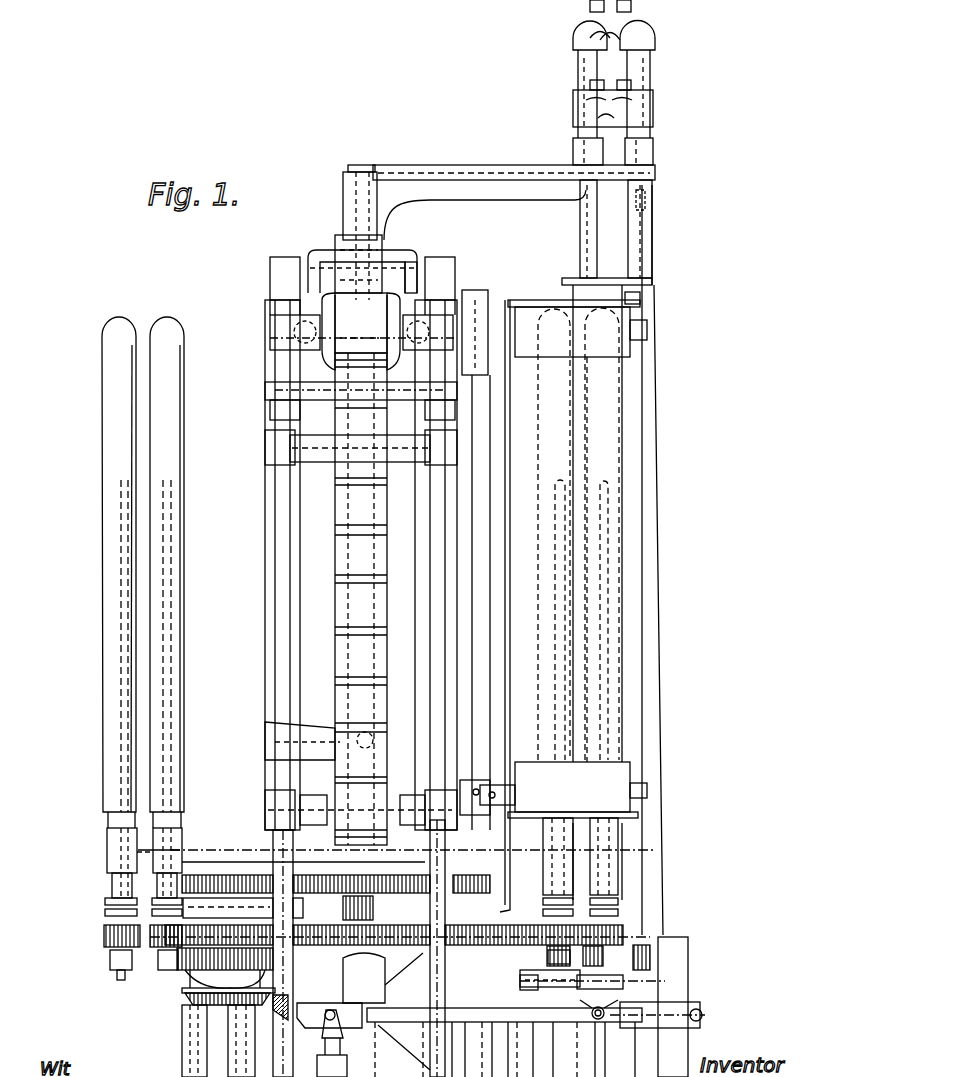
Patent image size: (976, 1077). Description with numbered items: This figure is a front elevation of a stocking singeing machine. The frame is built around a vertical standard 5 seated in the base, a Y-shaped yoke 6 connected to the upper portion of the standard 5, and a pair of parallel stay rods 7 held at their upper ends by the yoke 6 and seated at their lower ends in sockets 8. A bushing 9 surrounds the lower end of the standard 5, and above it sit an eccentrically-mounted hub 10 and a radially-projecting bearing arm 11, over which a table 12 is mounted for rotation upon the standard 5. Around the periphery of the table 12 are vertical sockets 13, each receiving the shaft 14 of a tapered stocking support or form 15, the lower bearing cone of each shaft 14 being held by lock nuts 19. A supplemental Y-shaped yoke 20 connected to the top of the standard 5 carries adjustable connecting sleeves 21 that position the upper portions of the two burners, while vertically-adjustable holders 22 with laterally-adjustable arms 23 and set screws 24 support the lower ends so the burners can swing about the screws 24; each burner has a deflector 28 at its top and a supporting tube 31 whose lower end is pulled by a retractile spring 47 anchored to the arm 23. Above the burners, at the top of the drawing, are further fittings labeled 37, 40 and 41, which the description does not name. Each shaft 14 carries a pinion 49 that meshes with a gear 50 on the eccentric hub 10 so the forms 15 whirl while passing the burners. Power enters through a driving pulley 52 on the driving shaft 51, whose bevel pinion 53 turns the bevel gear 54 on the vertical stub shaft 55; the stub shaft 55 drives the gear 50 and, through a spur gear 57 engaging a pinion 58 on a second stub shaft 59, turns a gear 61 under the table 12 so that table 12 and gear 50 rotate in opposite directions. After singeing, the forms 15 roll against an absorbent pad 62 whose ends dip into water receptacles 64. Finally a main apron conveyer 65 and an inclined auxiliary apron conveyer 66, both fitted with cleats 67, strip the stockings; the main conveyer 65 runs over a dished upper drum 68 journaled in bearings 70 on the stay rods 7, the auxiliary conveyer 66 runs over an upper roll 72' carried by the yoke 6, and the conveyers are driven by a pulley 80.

The standard 5 is at (367, 165).
The Y-shaped yoke 6 is at (418, 260).
The stay rods 7 is at (265, 582).
The sockets 8 is at (305, 1035).
The bushing 9 is at (392, 985).
The eccentrically-mounted hub 10 is at (400, 924).
The bearing arm 11 is at (202, 878).
The table 12 is at (248, 852).
The sockets 13 is at (107, 862).
The shaft 14 is at (122, 975).
The stocking support or form 15 is at (102, 602).
The lock nuts 19 is at (105, 912).
The supplemental Y-shaped yoke 20 is at (468, 166).
The connecting sleeves 21 is at (573, 150).
The holders 22 is at (560, 990).
The arms 23 is at (520, 976).
The set screws 24 is at (594, 1022).
The deflector 28 is at (572, 278).
The supporting tube 31 is at (642, 237).
The pipes 37 is at (620, 86).
The caps 40 is at (633, 6).
The manifold block 41 is at (573, 118).
The retractile spring 47 is at (650, 957).
The pinion 49 is at (104, 937).
The gear 50 is at (252, 900).
The driving shaft 51 is at (468, 1008).
The driving pulley 52 is at (690, 990).
The bevel pinion 53 is at (322, 1008).
The bevel gear 54 is at (182, 995).
The stub shaft 55 is at (240, 1010).
The spur gear 57 is at (190, 980).
The pinion 58 is at (177, 958).
The second stub shaft 59 is at (188, 1008).
The gear 61 is at (345, 896).
The absorbent pad 62 is at (530, 307).
The water receptacles 64 is at (556, 358).
The main apron conveyer 65 is at (361, 323).
The auxiliary apron conveyer 66 is at (382, 250).
The cleats 67 is at (366, 490).
The upper drum 68 is at (318, 360).
The bearings 70 is at (270, 345).
The upper roll 72' is at (356, 260).
The pulley 80 is at (476, 292).